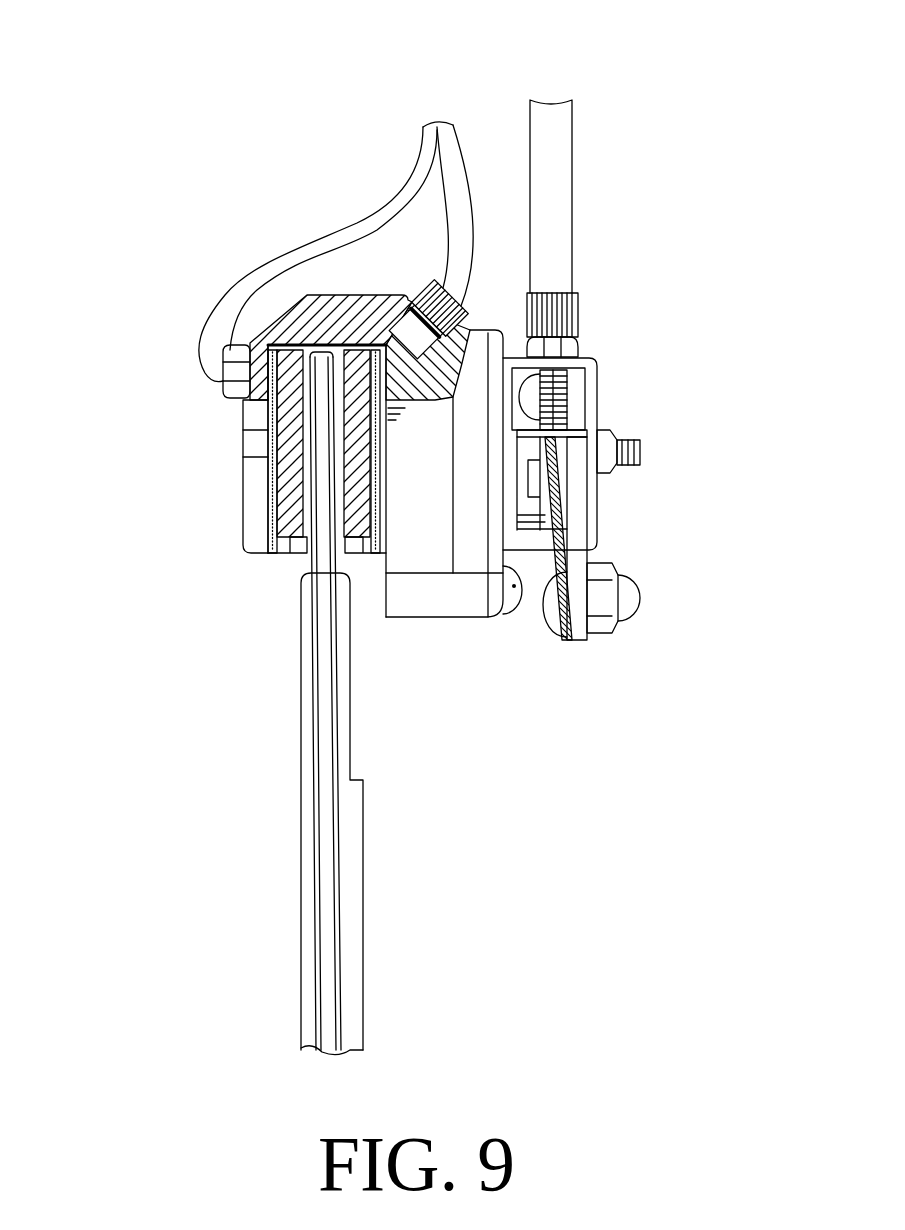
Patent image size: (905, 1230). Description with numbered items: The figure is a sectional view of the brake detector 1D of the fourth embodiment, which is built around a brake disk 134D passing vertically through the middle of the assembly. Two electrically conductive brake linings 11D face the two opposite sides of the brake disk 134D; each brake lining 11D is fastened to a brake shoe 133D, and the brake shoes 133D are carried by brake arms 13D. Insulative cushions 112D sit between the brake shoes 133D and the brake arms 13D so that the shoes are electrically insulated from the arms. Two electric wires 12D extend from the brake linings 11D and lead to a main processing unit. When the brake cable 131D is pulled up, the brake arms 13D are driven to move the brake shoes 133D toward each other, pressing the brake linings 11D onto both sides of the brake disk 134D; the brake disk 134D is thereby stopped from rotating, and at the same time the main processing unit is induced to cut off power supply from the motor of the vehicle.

The brake detector 1D is at (308, 220).
The brake lining 11D is at (300, 553).
The insulative cushion 112D is at (276, 555).
The electric wire 12D is at (470, 217).
The brake arm 13D is at (390, 443).
The brake cable 131D is at (557, 493).
The brake shoe 133D is at (273, 479).
The brake disk 134D is at (327, 857).